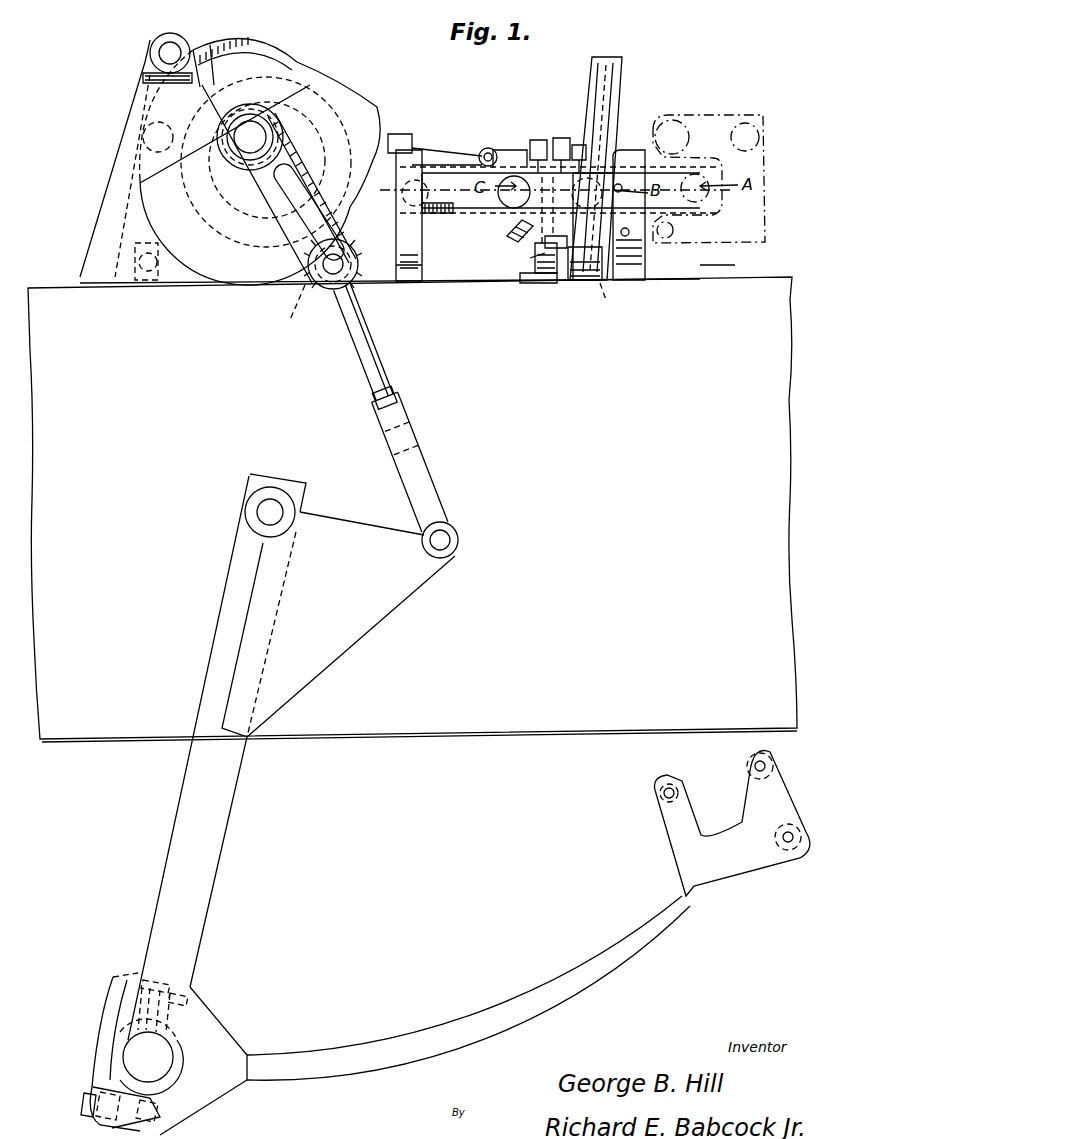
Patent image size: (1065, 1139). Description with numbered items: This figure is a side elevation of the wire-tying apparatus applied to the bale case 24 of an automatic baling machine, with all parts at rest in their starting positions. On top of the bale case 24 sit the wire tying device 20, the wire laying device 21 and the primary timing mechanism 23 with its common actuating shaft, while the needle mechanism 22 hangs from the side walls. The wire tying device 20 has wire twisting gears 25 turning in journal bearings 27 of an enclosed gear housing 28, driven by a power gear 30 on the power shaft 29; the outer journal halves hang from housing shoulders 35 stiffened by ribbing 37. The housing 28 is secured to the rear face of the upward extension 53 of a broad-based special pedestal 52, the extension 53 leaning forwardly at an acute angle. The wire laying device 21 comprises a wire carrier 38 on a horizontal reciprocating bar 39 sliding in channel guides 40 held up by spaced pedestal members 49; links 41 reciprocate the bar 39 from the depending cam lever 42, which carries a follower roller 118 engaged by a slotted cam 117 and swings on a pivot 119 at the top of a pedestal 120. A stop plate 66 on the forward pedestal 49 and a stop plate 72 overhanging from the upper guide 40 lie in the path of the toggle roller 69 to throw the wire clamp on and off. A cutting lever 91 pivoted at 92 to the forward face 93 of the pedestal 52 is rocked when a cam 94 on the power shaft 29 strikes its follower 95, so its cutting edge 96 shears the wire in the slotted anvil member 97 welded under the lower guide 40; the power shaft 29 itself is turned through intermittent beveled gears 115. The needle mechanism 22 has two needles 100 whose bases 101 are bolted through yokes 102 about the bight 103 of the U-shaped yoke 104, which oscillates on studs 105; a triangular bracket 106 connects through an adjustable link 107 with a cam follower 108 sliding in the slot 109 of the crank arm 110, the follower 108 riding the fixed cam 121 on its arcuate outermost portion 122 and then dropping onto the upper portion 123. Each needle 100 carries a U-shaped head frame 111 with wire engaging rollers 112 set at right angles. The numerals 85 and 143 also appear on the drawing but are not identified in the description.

The wire tying device 20 is at (615, 105).
The wire laying device 21 is at (472, 204).
The needle mechanism 22 is at (578, 962).
The primary timing mechanism 23 is at (262, 52).
The bale case 24 is at (412, 509).
The wire twisting gears 25 is at (645, 255).
The journal bearings 27 is at (612, 294).
The gear housing 28 is at (598, 90).
The power shaft 29 is at (450, 152).
The power gear 30 is at (608, 78).
The housing shoulders 35 is at (620, 115).
The ribbing 37 is at (622, 100).
The wire carrier 38 is at (622, 160).
The reciprocating bar 39 is at (470, 218).
The channel guides 40 is at (457, 212).
The links 41 is at (358, 230).
The cam lever 42 is at (148, 66).
The pedestal members 49 is at (422, 262).
The special pedestal 52 is at (535, 283).
The upward extension 53 is at (575, 280).
The stop plate 66 is at (400, 134).
The roller 69 is at (488, 148).
The stop plate 72 is at (515, 150).
The valve 85 is at (532, 140).
The cutting lever 91 is at (542, 273).
The pivot 92 is at (528, 258).
The forward face 93 is at (556, 233).
The cams 94 is at (556, 138).
The followers 95 is at (580, 145).
The cutting edges 96 is at (512, 240).
The anvil members 97 is at (507, 235).
The needles 100 is at (448, 1032).
The bases 101 is at (205, 1020).
The yokes 102 is at (108, 1018).
The bight 103 is at (167, 1077).
The U-shaped yoke 104 is at (213, 853).
The studs 105 is at (268, 513).
The triangular brackets 106 is at (378, 592).
The links 107 is at (430, 470).
The cam follower 108 is at (300, 308).
The slot 109 is at (300, 290).
The crank arm 110 is at (358, 280).
The frame 111 is at (710, 872).
The wire engaging rollers 112 is at (732, 809).
The beveled gears 115 is at (300, 105).
The slotted cams 117 is at (330, 72).
The follower rollers 118 is at (143, 128).
The pivots 119 is at (150, 47).
The pedestals 120 is at (103, 186).
The fixed cams 121 is at (200, 262).
The outermost portions 122 is at (235, 270).
The upper portion 123 is at (290, 87).
The pulley 143 is at (250, 137).